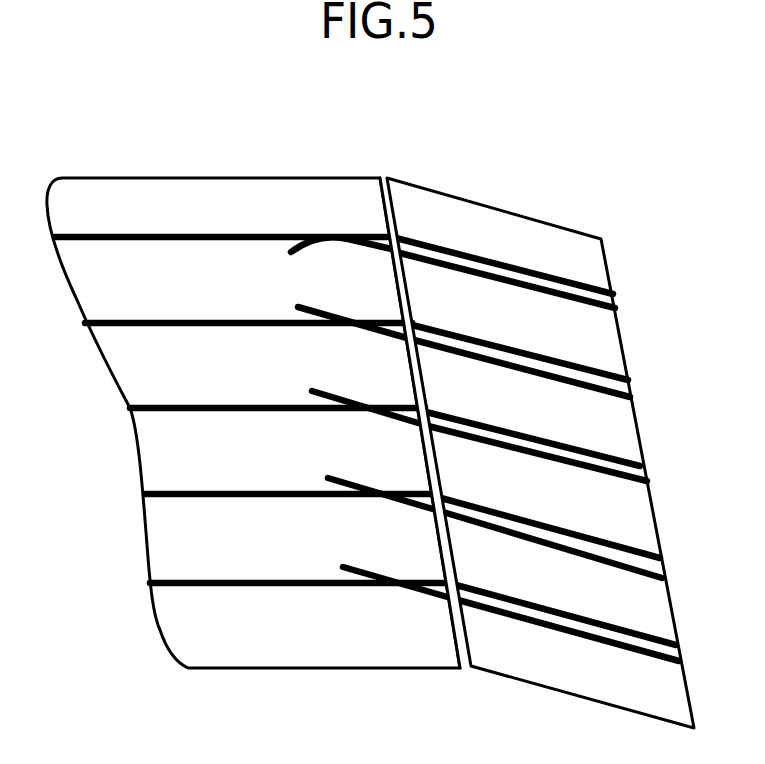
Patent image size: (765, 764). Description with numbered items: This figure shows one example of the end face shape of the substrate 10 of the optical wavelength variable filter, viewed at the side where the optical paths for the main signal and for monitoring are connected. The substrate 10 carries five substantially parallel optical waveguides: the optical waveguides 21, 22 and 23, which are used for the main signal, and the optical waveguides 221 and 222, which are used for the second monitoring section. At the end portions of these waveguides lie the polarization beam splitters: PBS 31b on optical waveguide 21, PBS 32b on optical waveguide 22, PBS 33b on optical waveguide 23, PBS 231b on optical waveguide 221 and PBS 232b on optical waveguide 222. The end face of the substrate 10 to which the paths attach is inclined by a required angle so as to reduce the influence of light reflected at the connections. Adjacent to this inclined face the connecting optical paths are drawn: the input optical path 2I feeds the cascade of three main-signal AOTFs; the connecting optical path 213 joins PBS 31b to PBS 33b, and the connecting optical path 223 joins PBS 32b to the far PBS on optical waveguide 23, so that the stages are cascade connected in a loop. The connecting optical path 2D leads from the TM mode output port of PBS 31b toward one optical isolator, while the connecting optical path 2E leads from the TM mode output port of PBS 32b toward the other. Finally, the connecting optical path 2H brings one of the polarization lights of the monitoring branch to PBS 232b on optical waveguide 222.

The substrate 10 is at (200, 178).
The optical waveguide 221 is at (135, 236).
The polarization beam splitter 231b is at (343, 237).
The optical waveguide 21 is at (130, 323).
The polarization beam splitter 31b is at (312, 326).
The optical waveguide 22 is at (133, 408).
The polarization beam splitter 32b is at (337, 411).
The optical waveguide 23 is at (157, 494).
The polarization beam splitter 33b is at (345, 497).
The optical waveguide 222 is at (197, 585).
The polarization beam splitter 232b is at (387, 585).
The input optical path 2I is at (590, 285).
The connecting optical path 213 is at (600, 377).
The connecting optical path 2D is at (613, 392).
The connecting optical path 223 is at (610, 455).
The connecting optical path 2E is at (633, 473).
The connecting optical path 2H is at (642, 628).